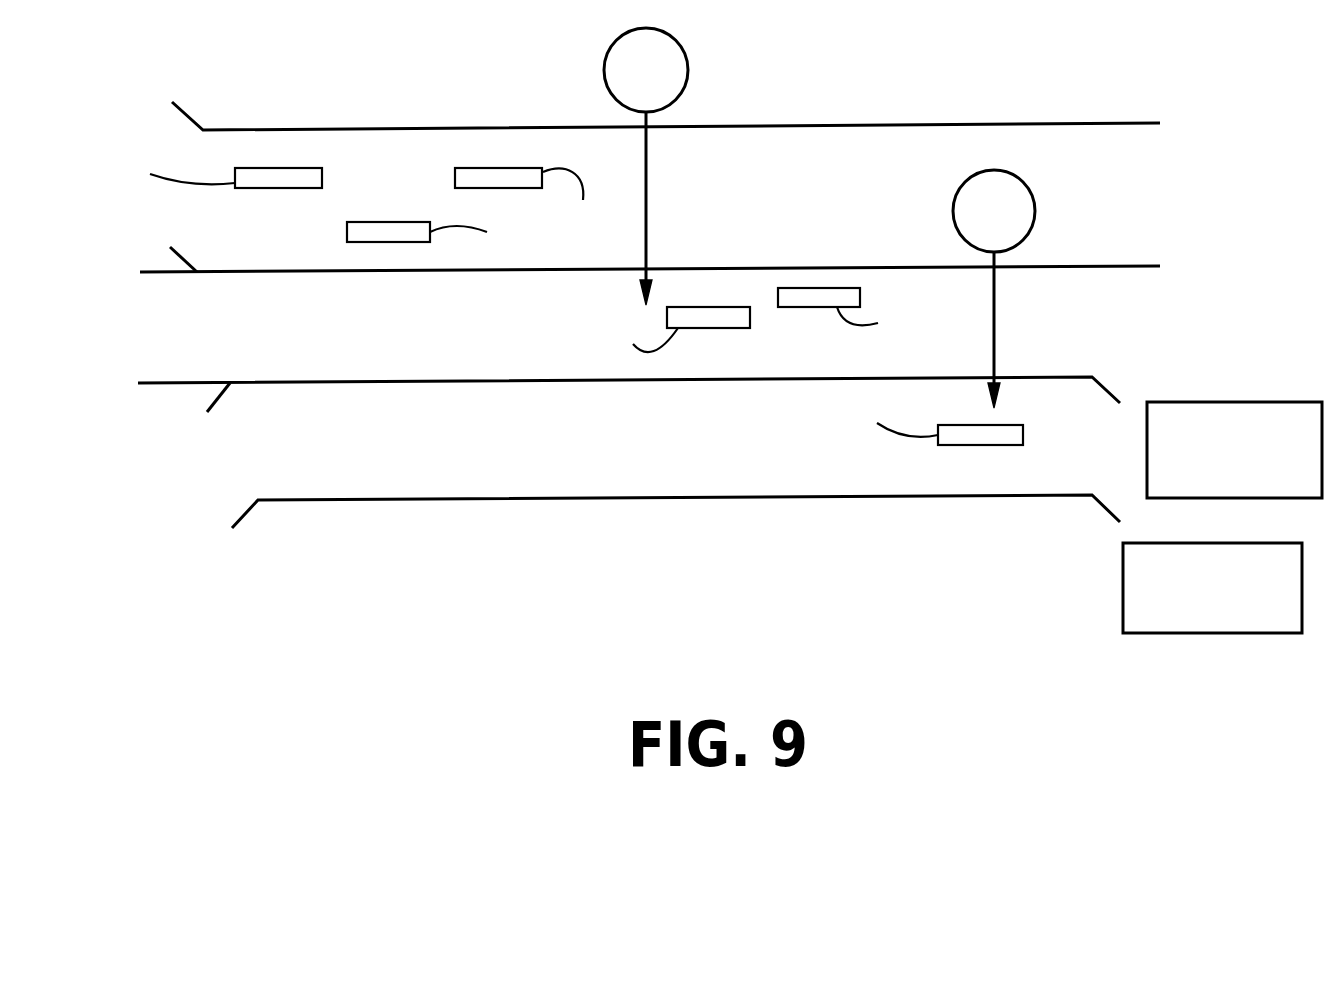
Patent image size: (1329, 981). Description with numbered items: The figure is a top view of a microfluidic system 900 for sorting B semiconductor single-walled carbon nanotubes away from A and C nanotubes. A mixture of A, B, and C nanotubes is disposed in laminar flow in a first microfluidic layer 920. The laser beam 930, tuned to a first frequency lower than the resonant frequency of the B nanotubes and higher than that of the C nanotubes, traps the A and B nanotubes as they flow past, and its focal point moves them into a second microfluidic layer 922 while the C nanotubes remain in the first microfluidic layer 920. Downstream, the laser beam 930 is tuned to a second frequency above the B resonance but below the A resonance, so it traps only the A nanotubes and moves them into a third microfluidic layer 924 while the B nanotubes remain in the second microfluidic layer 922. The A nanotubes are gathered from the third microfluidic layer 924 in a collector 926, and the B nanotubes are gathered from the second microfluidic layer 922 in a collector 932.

The microfluidic system 900 is at (867, 598).
The first microfluidic layer 920 is at (738, 213).
The second microfluidic layer 922 is at (423, 339).
The third microfluidic layer 924 is at (423, 457).
The collector 926 is at (1155, 633).
The laser beam 930 is at (688, 66).
The collector 932 is at (1283, 402).